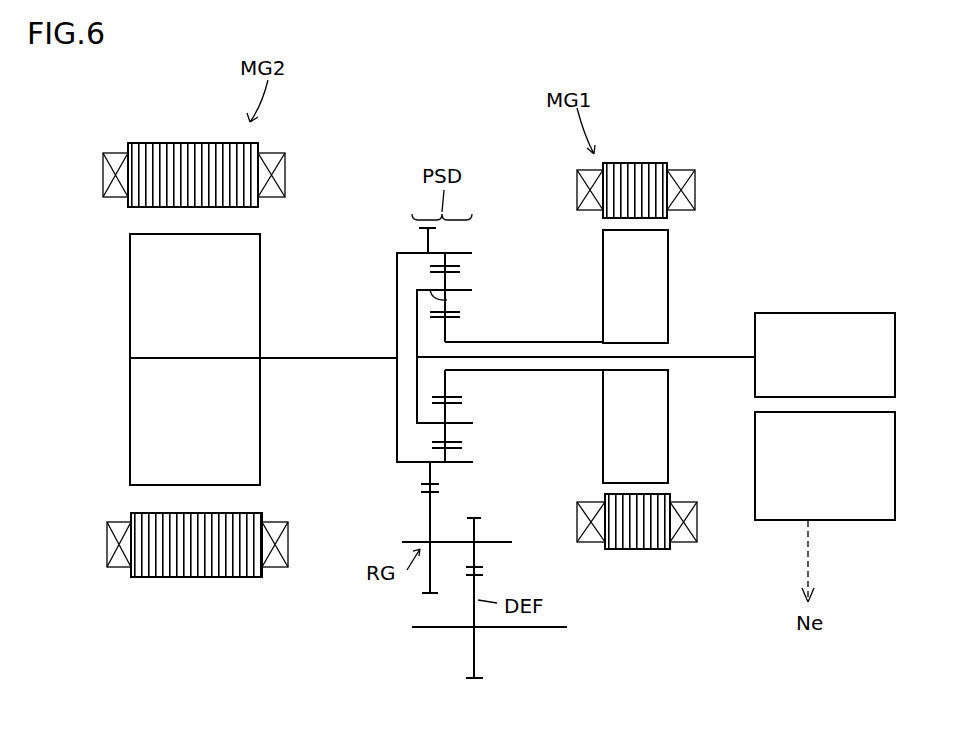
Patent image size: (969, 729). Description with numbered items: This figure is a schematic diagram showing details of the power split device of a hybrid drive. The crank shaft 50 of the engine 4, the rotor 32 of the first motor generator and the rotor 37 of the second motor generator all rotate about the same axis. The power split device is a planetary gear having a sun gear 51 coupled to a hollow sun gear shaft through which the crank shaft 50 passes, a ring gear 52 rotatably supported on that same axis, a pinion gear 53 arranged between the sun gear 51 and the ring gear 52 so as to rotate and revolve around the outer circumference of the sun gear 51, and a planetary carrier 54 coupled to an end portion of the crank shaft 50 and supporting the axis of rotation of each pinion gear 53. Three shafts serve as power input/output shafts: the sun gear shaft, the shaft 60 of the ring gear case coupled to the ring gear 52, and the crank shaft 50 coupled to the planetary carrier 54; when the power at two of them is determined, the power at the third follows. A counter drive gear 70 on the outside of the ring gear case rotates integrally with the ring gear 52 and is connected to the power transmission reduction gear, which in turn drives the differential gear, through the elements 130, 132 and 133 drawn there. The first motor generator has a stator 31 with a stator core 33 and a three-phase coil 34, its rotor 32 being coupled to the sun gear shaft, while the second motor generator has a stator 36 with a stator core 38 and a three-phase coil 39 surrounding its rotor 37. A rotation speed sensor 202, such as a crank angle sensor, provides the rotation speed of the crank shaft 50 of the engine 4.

The engine 4 is at (843, 313).
The stator 31 is at (715, 530).
The rotor 32 is at (668, 286).
The stator core 33 is at (632, 161).
The three-phase coil 34 is at (680, 168).
The stator 36 is at (303, 552).
The rotor 37 is at (130, 273).
The stator core 38 is at (157, 141).
The three-phase coil 39 is at (111, 141).
The crank shaft 50 is at (713, 359).
The sun gear 51 is at (448, 335).
The ring gear 52 is at (448, 257).
The pinion gear 53 is at (448, 284).
The planetary carrier 54 is at (448, 307).
The shaft of ring gear case 60 is at (290, 360).
The counter drive gear 70 is at (440, 477).
The reduction gear shaft 130 is at (405, 542).
The reduction gear output gear 132 is at (430, 594).
The differential input gear 133 is at (477, 516).
The rotation speed sensor 202 is at (847, 522).